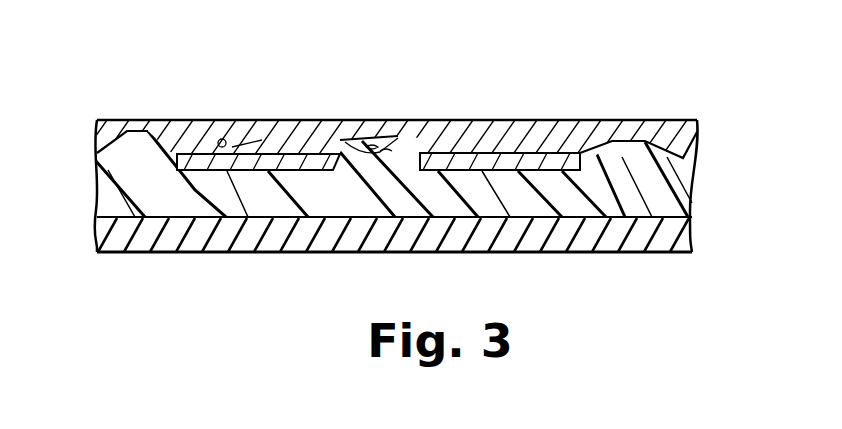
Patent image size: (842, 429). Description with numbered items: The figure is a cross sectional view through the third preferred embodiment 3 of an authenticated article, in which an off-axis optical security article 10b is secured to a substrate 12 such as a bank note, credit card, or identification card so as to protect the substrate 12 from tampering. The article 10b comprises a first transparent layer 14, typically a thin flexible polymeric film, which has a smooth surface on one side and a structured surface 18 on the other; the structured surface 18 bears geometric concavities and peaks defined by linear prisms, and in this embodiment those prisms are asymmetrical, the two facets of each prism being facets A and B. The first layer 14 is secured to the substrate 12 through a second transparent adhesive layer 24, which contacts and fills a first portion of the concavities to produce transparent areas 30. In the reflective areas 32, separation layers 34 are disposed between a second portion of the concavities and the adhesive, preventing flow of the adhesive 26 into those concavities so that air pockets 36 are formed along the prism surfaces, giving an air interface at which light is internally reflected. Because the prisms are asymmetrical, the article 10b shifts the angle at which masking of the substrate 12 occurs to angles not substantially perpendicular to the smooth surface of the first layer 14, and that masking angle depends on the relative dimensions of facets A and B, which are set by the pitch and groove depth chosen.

The third preferred embodiment 3 is at (685, 88).
The off-axis optical security article 10b is at (712, 120).
The substrate 12 is at (148, 233).
The first transparent layer 14 is at (119, 121).
The structured surface 18 is at (358, 154).
The second transparent adhesive layer 24 is at (125, 182).
The adhesive 26 is at (572, 195).
The transparent areas 30 is at (588, 116).
The reflective areas 32 is at (422, 117).
The separation layers 34 is at (388, 152).
The air pockets 36 is at (235, 128).
The facet A is at (238, 145).
The facet B is at (207, 140).